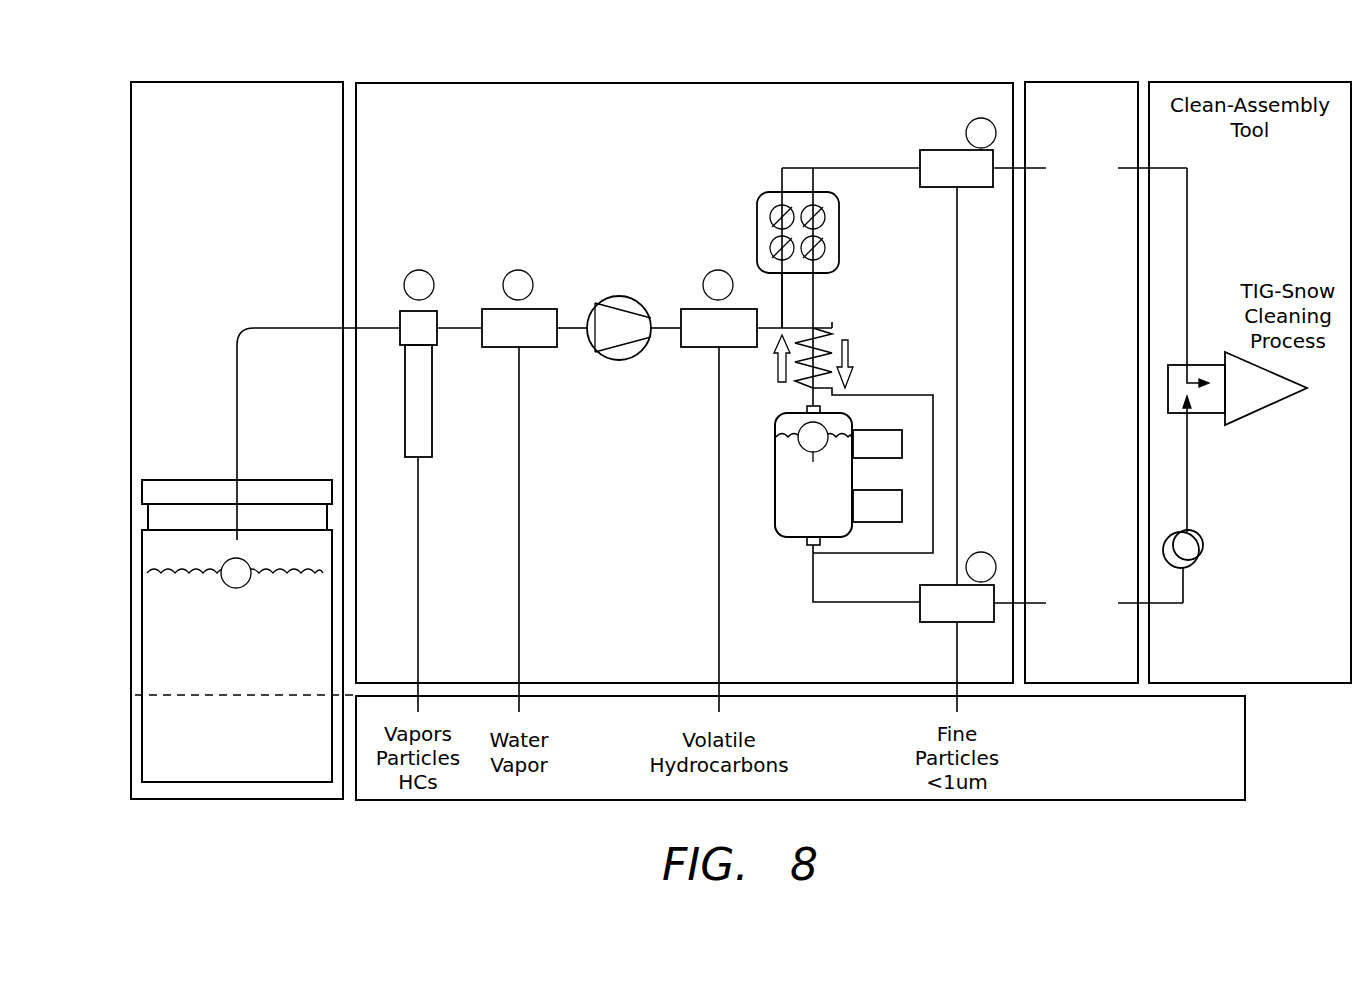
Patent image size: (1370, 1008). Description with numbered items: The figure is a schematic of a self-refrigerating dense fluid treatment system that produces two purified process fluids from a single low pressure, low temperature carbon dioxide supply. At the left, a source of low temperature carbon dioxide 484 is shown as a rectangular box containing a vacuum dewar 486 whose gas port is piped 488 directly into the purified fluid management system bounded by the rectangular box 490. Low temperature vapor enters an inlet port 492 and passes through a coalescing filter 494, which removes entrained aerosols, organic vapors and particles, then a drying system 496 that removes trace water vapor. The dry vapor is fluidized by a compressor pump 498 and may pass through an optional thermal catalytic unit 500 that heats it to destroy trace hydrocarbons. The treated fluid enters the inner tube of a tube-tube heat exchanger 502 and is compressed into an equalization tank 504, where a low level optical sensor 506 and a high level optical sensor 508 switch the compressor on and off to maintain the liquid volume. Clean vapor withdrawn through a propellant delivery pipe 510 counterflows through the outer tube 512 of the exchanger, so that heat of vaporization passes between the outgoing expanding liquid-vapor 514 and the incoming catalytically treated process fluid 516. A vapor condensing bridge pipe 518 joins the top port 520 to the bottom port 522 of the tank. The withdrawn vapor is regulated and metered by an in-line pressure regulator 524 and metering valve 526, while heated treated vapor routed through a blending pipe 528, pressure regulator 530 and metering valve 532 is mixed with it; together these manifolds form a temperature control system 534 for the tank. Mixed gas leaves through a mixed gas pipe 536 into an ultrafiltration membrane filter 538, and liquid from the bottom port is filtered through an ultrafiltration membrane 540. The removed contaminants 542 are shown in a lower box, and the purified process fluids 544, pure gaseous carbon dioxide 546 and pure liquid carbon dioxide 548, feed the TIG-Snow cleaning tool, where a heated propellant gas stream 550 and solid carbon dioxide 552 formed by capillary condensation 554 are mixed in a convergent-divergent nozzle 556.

The source of low temperature carbon dioxide 484 is at (248, 103).
The vacuum dewar 486 is at (178, 480).
The pipe 488 is at (237, 373).
The PFMS 490 is at (392, 103).
The inlet port 492 is at (352, 325).
The coalescing filter 494 is at (388, 308).
The drying system 496 is at (485, 308).
The compressor pump 498 is at (597, 300).
The thermal catalytic unit 500 is at (682, 318).
The tube-tube heat exchanger 502 is at (798, 323).
The equalization tank 504 is at (775, 506).
The low level optical sensor 506 is at (893, 490).
The high level optical sensor 508 is at (893, 430).
The propellant delivery pipe 510 is at (810, 455).
The outer tube 512 is at (835, 330).
The outgoing expanding liquid-vapor 514 is at (773, 372).
The incoming catalytically treated process fluid 516 is at (856, 348).
The vapor condensing bridge pipe 518 is at (933, 462).
The top port 520 is at (806, 401).
The bottom port 522 is at (808, 545).
The in-line pressure regulator 524 is at (828, 252).
The metering valve 526 is at (828, 222).
The blending pipe 528 is at (782, 287).
The pressure regulator 530 is at (770, 251).
The metering valve 532 is at (770, 221).
The temperature control system 534 is at (761, 193).
The mixed gas pipe 536 is at (858, 166).
The ultrafiltration membrane filter 538 is at (930, 149).
The ultrafiltration membrane 540 is at (927, 612).
The contaminants 542 is at (1232, 768).
The purified process fluids 544 is at (1056, 104).
The pure gaseous carbon dioxide 546 is at (1110, 162).
The pure liquid carbon dioxide 548 is at (1110, 598).
The heated propellant gas stream 550 is at (1189, 226).
The solid carbon dioxide 552 is at (1189, 483).
The capillary condensation 554 is at (1200, 534).
The convergent-divergent nozzle 556 is at (1260, 396).